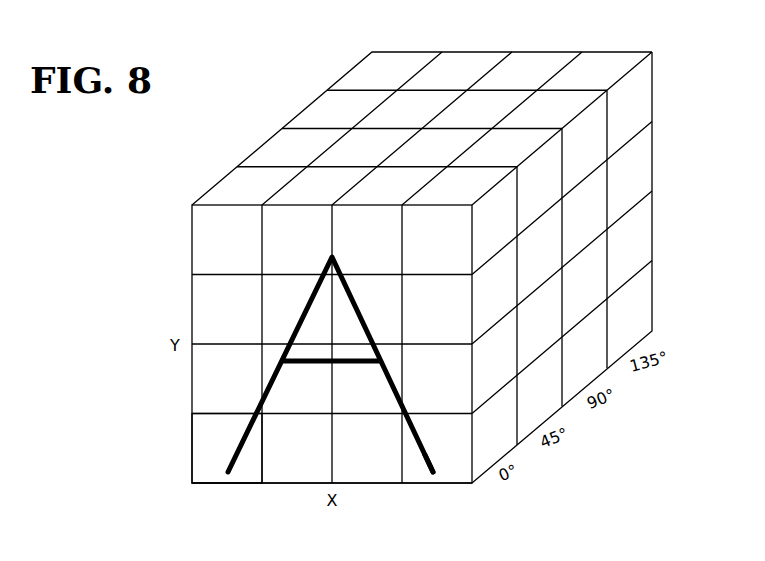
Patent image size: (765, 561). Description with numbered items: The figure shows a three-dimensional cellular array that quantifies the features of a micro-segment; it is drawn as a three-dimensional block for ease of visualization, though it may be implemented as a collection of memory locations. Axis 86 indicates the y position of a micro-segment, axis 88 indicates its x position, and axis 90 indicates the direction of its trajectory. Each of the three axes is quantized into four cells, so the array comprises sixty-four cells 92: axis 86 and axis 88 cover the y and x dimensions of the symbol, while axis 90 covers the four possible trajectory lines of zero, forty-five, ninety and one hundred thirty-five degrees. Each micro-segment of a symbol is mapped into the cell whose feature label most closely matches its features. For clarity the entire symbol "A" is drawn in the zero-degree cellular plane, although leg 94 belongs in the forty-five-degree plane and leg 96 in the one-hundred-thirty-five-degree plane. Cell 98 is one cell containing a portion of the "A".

The axis 86 is at (191, 236).
The axis 88 is at (373, 484).
The axis 90 is at (656, 333).
The cells 92 is at (245, 187).
The leg 94 is at (272, 382).
The leg 96 is at (434, 459).
The cell 98 is at (206, 447).